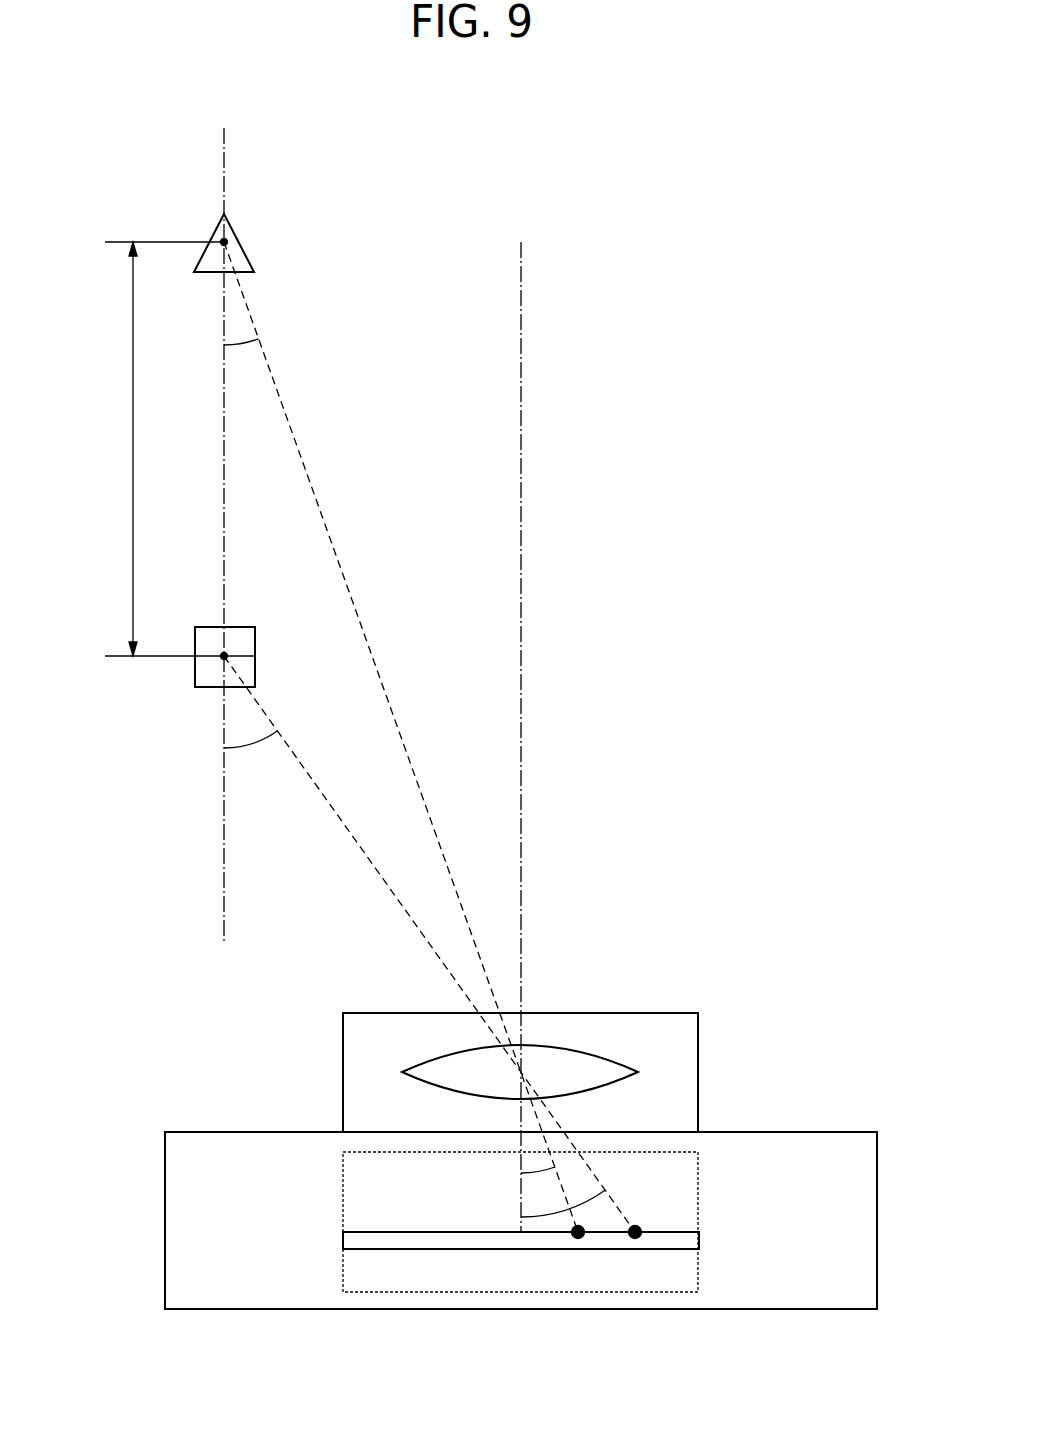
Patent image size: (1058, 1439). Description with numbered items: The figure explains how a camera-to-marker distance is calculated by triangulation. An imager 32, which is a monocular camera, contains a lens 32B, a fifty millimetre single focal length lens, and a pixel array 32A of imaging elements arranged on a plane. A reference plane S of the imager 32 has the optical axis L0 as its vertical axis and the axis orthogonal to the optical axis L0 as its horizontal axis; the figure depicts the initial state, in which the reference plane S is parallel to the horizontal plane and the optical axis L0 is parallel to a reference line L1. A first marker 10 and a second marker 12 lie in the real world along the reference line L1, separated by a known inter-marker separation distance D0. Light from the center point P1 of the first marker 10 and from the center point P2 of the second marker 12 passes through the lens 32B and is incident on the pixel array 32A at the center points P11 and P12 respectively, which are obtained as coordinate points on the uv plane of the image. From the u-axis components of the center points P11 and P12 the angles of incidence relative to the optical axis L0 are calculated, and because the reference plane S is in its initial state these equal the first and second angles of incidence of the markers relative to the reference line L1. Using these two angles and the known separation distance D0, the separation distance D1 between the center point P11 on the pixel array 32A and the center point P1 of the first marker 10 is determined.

The first marker 10 is at (252, 262).
The second marker 12 is at (240, 625).
The imager 32 is at (521, 1167).
The pixel array 32A is at (687, 1250).
The lens 32B is at (582, 1050).
The reference line L1 is at (225, 160).
The optical axis L0 is at (522, 422).
The center point of the first marker P1 is at (232, 242).
The center point of the second marker P2 is at (255, 657).
The center point of the first marker on the pixel array P11 is at (578, 1240).
The center point of the second marker on the pixel array P12 is at (635, 1240).
The separation distance D0 is at (164, 449).
The separation distance D1 is at (368, 645).
The reference plane S is at (520, 1222).